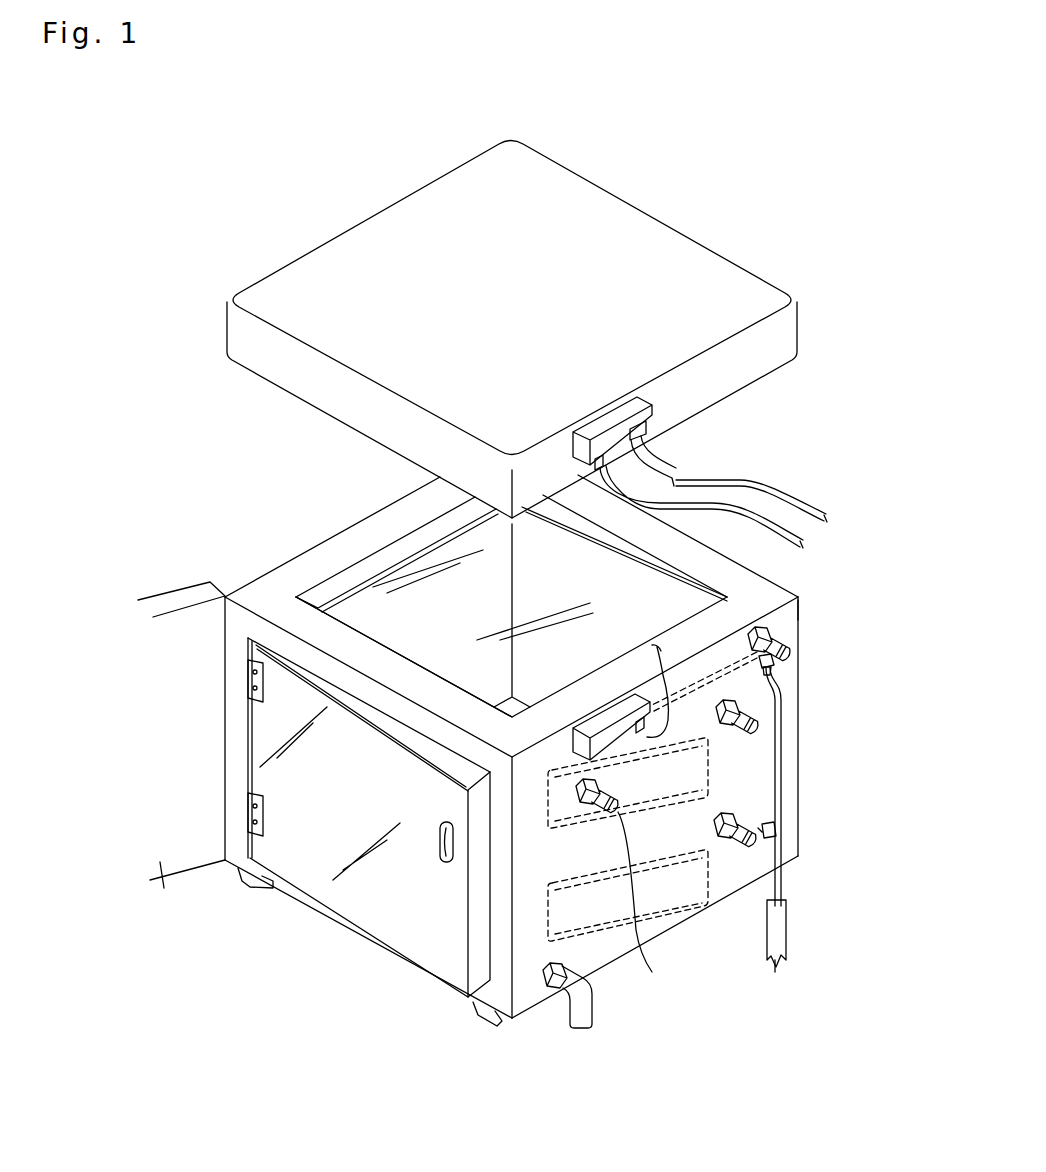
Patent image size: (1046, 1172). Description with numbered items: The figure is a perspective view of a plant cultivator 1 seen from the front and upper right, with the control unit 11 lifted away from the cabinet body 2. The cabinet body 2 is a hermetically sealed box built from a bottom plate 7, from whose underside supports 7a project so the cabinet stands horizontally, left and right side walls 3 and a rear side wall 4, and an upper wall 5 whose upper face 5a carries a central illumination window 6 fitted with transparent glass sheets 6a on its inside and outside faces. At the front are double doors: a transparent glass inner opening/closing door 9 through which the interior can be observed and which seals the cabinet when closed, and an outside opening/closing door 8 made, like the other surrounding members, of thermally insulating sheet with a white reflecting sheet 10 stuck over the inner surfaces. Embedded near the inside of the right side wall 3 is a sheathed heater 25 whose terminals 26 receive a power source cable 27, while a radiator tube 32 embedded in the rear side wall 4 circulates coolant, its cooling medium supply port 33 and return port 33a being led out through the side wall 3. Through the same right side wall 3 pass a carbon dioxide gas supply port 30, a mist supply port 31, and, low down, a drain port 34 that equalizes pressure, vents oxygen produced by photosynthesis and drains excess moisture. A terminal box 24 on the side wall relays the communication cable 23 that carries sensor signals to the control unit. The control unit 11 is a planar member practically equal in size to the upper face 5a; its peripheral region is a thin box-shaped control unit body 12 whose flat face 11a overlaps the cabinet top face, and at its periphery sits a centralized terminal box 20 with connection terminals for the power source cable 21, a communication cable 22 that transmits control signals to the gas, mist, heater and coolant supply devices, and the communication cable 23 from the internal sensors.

The plant cultivator 1 is at (679, 163).
The cabinet body 2 is at (818, 916).
The side wall 3 is at (237, 594).
The rear side wall 4 is at (783, 600).
The upper wall 5 is at (313, 557).
The upper face 5a is at (363, 537).
The illumination window 6 is at (463, 530).
The transparent glass sheet 6a is at (420, 557).
The bottom plate 7 is at (313, 907).
The support 7a is at (254, 893).
The outside opening/closing door 8 is at (163, 888).
The inner opening/closing door 9 is at (370, 925).
The white reflecting sheet 10 is at (370, 630).
The control unit 11 is at (247, 262).
The flat face 11a is at (252, 373).
The control unit body 12 is at (350, 240).
The centralized terminal box 20 is at (592, 428).
The power source cable 21 is at (717, 500).
The communication cable 22 is at (693, 480).
The communication cable 23 is at (670, 468).
The terminal box 24 is at (578, 725).
The heater 25 is at (597, 920).
The terminal 26 is at (768, 668).
The power source cable 27 is at (773, 973).
The carbon dioxide gas supply port 30 is at (760, 733).
The mist supply port 31 is at (629, 891).
The radiator tube 32 is at (789, 619).
The cooling medium supply port 33 is at (795, 655).
The return port 33a is at (770, 853).
The drain port 34 is at (582, 1028).